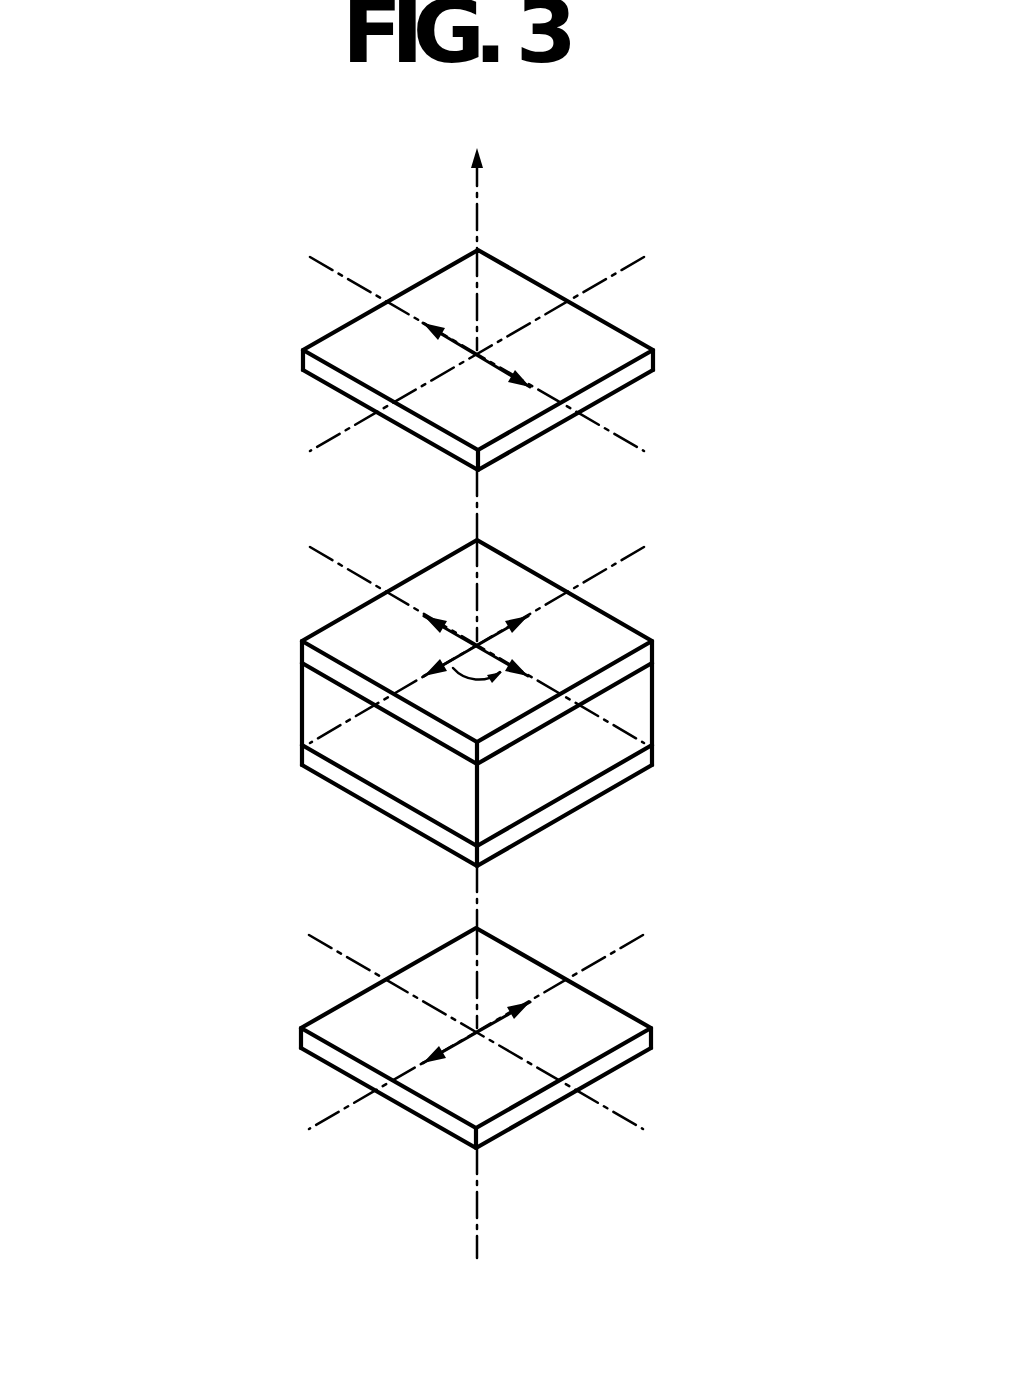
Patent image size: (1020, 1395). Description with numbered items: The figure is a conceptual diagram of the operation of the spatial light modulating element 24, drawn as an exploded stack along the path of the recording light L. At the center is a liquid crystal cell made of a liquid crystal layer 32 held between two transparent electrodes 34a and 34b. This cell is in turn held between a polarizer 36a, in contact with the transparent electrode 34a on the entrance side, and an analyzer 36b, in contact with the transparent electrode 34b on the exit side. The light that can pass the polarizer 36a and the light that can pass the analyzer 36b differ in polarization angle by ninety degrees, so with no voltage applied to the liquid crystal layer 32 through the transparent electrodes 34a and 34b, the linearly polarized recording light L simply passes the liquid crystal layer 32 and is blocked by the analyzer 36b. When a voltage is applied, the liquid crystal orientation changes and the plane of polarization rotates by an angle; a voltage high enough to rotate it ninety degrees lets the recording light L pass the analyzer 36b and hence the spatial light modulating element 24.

The spatial light modulating element 24 is at (228, 562).
The liquid crystal layer 32 is at (633, 708).
The transparent electrode 34a is at (613, 773).
The transparent electrode 34b is at (602, 632).
The polarizer 36a is at (600, 1010).
The analyzer 36b is at (603, 330).
The recording light L is at (473, 1195).